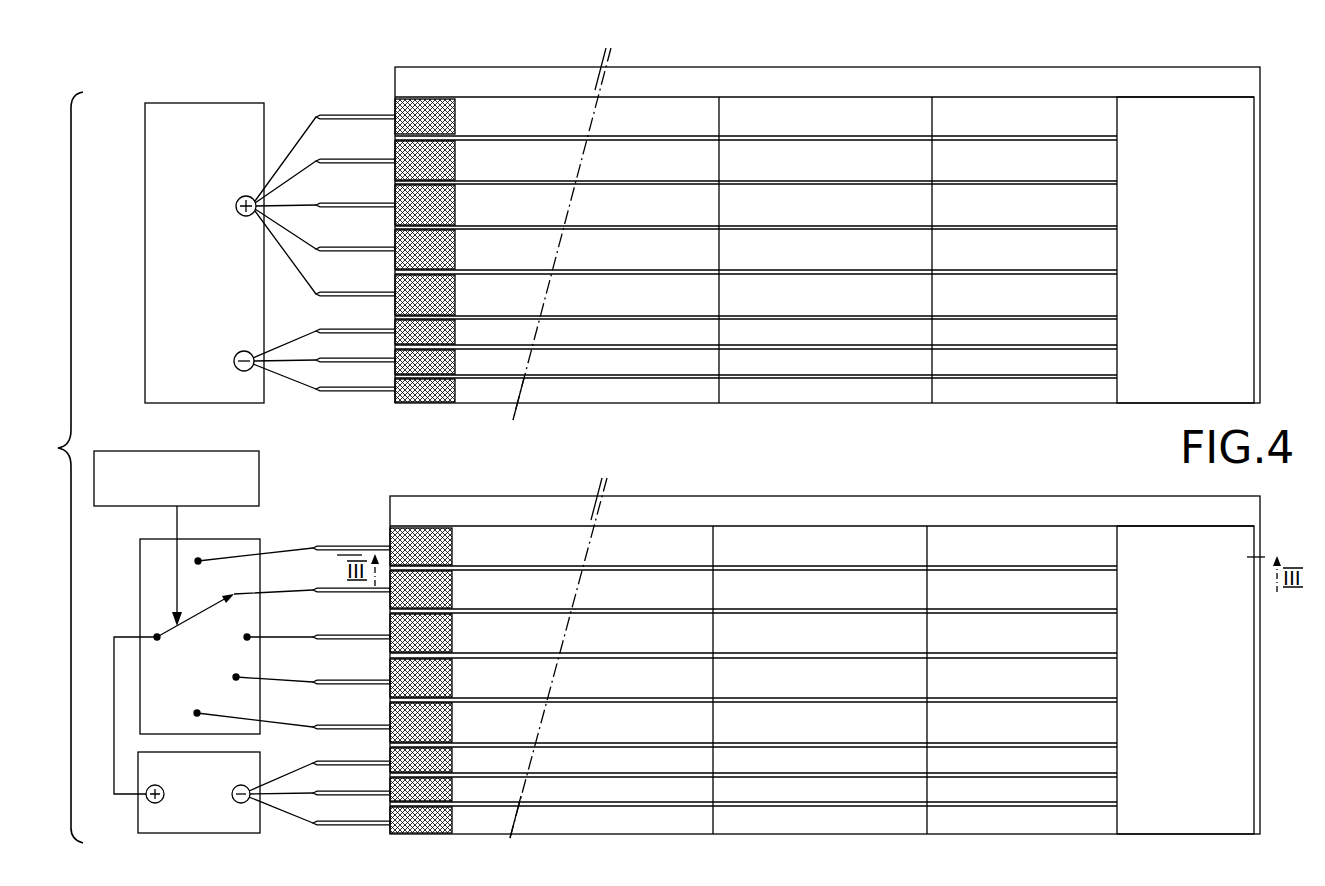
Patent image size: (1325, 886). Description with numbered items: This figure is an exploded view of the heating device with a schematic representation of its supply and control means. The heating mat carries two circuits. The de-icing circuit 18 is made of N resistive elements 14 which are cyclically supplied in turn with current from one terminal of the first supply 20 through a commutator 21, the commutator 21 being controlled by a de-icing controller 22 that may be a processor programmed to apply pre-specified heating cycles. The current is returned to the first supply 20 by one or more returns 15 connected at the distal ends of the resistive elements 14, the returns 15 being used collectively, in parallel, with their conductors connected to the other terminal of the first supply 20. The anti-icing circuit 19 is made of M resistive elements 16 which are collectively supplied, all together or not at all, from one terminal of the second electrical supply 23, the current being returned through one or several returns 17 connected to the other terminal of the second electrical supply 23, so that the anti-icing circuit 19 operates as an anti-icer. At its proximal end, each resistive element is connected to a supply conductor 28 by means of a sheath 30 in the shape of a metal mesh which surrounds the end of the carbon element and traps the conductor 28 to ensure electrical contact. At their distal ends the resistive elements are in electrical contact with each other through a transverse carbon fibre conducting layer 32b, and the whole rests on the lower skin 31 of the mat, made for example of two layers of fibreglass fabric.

The resistive elements 14 is at (502, 582).
The returns 15 is at (593, 819).
The resistive elements 16 is at (507, 155).
The returns 17 is at (600, 390).
The de-icing circuit 18 is at (865, 841).
The anti-icing circuit 19 is at (866, 409).
The first supply 20 is at (147, 812).
The commutator 21 is at (149, 554).
The de-icing controller 22 is at (200, 451).
The second electrical supply 23 is at (207, 125).
The supply conductor 28 is at (333, 117).
The sheath 30 is at (420, 113).
The lower skin 31 is at (1149, 82).
The carbon fibre conducting layer 32b is at (1234, 348).